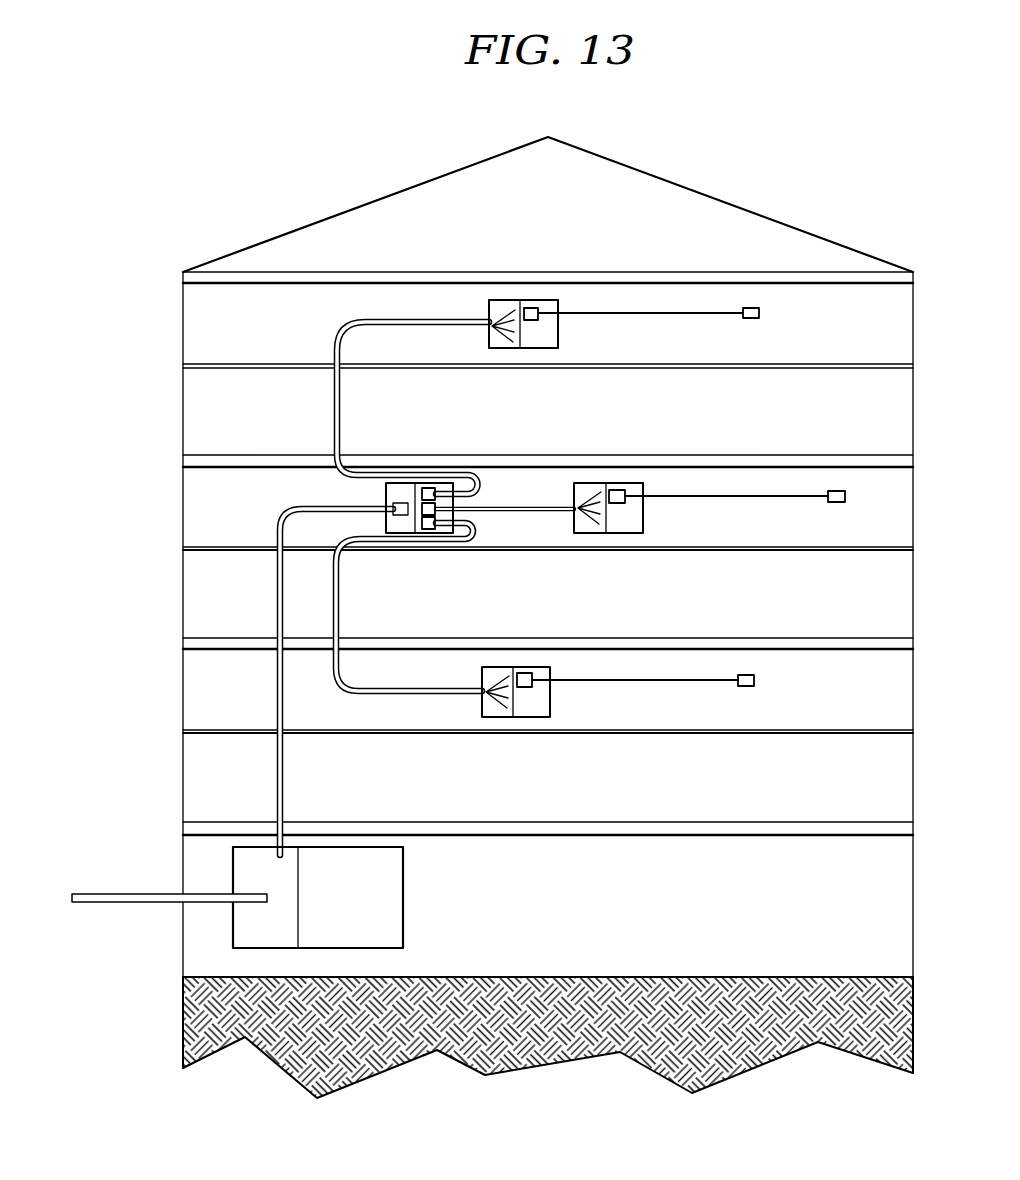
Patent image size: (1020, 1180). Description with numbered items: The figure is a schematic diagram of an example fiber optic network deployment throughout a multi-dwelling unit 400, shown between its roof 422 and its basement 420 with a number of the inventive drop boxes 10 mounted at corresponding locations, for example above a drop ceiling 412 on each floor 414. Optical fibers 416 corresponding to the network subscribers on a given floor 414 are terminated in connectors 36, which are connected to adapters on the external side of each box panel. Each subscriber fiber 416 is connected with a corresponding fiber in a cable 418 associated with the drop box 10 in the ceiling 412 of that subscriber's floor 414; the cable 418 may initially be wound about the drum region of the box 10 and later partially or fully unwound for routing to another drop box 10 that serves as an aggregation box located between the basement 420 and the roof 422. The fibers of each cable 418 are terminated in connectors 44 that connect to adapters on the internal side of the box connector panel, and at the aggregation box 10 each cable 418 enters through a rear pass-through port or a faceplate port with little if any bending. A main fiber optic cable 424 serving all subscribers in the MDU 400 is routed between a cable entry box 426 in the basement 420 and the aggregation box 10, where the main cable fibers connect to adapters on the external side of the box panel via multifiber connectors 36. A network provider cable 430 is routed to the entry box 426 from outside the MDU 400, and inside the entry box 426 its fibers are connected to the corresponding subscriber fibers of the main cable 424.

The multi-dwelling unit 400 is at (778, 174).
The roof 422 is at (372, 200).
The ceiling 412 is at (292, 366).
The floor 414 is at (740, 454).
The basement 420 is at (714, 976).
The cable 418 is at (333, 345).
The main fiber optic cable 424 is at (276, 685).
The drop box 10 is at (559, 336).
The connector 36 is at (536, 307).
The connector 44 is at (427, 530).
The optical fiber 416 is at (665, 314).
The cable entry box 426 is at (404, 905).
The network provider cable 430 is at (132, 903).